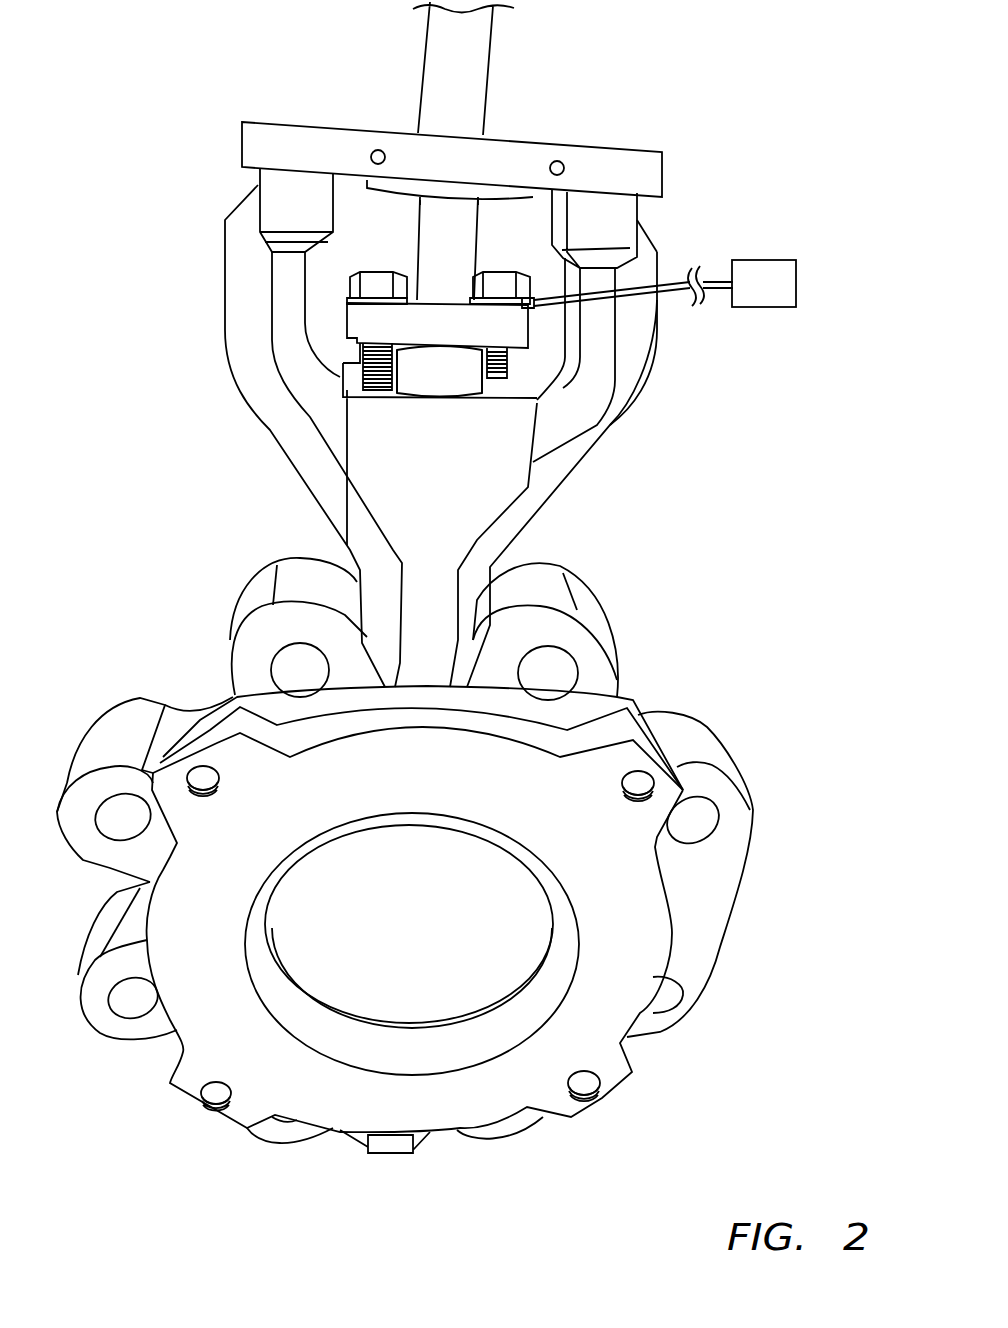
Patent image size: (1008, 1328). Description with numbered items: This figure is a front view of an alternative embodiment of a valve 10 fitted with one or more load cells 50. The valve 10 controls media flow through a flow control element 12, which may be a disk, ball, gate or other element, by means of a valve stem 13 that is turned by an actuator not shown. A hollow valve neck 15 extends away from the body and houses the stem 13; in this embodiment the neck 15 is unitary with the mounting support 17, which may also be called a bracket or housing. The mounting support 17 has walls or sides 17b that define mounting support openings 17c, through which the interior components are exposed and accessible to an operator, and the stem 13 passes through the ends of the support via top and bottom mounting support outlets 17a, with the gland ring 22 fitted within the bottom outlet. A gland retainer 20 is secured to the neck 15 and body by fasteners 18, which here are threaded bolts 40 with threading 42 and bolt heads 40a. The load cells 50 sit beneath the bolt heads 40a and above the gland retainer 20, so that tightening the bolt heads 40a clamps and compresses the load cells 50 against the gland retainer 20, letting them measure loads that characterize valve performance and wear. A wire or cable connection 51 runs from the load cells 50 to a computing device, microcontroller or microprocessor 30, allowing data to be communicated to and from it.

The valve 10 is at (743, 725).
The flow control element 12 is at (553, 945).
The valve stem 13 is at (490, 75).
The valve neck 15 is at (497, 567).
The mounting support 17 is at (625, 400).
The mounting support outlet 17a is at (473, 397).
The mounting support side 17b is at (600, 437).
The mounting support opening 17c is at (513, 228).
The fastener 18 is at (339, 270).
The gland retainer 20 is at (347, 327).
The gland ring 22 is at (430, 397).
The microcontroller 30 is at (763, 307).
The bolt 40 is at (382, 270).
The bolt head 40a is at (350, 287).
The threading 42 is at (343, 377).
The load cell 50 is at (347, 303).
The wire connection 51 is at (673, 292).